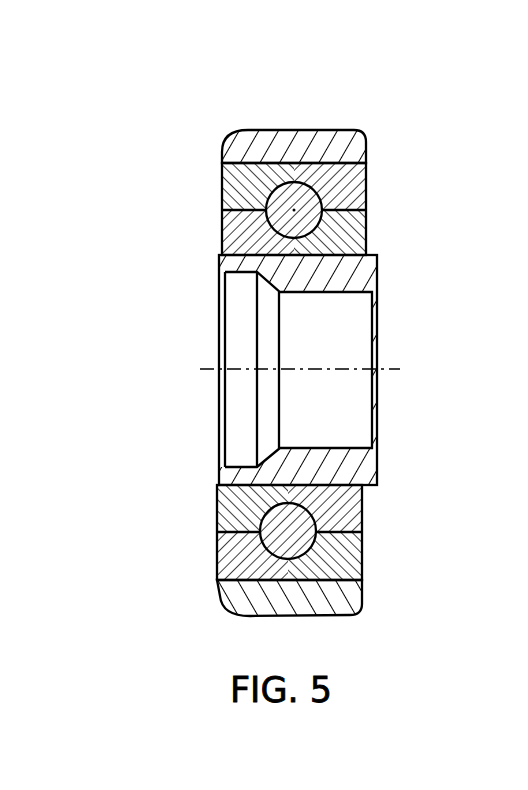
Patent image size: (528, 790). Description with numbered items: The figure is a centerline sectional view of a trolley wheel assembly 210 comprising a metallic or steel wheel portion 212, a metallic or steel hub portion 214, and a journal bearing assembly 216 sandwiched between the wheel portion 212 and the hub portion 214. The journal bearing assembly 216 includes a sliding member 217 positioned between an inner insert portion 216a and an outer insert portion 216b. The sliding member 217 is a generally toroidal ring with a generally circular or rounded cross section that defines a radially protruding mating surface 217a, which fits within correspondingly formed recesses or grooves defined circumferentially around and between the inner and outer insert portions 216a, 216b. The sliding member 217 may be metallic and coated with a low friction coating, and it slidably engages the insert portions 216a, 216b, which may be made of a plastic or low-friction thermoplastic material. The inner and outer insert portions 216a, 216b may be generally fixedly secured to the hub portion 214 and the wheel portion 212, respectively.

The wheel assembly 210 is at (171, 134).
The wheel portion 212 is at (300, 126).
The hub portion 214 is at (383, 406).
The journal bearing assembly 216 is at (270, 341).
The inner insert portion 216a is at (222, 242).
The outer insert portion 216b is at (360, 172).
The sliding member 217 is at (321, 206).
The radially protruding mating surface 217a is at (296, 207).